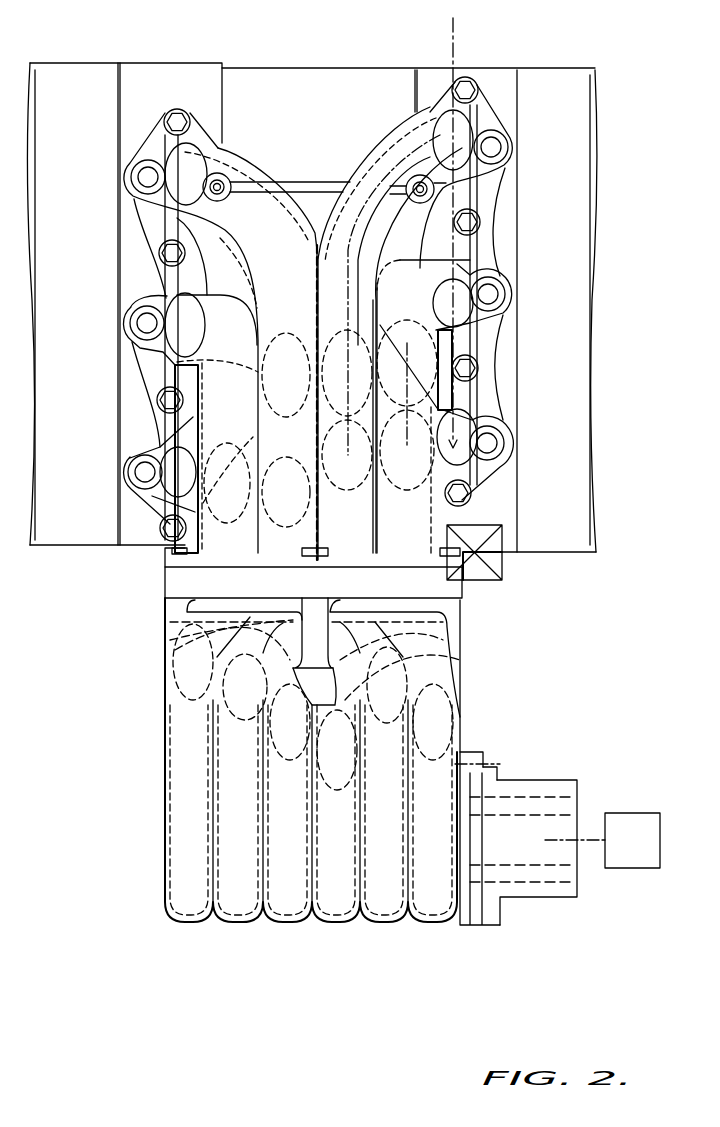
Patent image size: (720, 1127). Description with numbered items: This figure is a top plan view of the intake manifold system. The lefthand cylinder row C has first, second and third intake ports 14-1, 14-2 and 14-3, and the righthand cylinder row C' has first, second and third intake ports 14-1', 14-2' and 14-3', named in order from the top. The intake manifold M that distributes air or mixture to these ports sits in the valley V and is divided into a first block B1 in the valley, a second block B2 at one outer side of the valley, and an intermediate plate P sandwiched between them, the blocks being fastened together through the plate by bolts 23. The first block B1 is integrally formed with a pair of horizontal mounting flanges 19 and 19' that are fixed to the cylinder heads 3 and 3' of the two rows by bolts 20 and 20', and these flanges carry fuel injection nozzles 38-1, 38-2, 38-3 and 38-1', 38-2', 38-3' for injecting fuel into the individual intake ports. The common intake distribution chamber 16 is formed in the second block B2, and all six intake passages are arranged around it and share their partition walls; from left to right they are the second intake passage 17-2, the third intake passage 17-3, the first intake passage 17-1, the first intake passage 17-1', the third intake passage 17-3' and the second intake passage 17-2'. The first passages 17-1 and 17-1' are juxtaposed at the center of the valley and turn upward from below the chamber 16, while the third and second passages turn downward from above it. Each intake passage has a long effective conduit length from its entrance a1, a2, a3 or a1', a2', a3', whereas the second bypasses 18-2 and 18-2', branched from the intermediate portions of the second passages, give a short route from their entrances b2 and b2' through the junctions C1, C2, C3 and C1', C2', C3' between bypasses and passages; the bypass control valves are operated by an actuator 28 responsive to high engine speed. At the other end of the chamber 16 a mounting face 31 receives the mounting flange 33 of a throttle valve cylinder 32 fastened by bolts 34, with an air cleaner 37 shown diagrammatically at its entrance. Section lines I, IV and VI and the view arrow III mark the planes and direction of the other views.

The cylinder head 3 is at (131, 288).
The cylinder head 3' is at (427, 75).
The first intake port 14-1 is at (142, 219).
The second intake port 14-2 is at (137, 370).
The third intake port 14-3 is at (137, 475).
The first intake port 14-1' is at (475, 322).
The second intake port 14-2' is at (504, 335).
The third intake port 14-3' is at (506, 415).
The intake distribution chamber 16 is at (185, 814).
The first intake passage 17-1 is at (267, 541).
The second intake passage 17-2 is at (204, 608).
The third intake passage 17-3 is at (225, 657).
The first intake passage 17-1' is at (373, 538).
The second intake passage 17-2' is at (421, 608).
The third intake passage 17-3' is at (392, 635).
The second bypass 18-2 is at (142, 569).
The second bypass 18-2' is at (488, 539).
The mounting flange 19 is at (189, 333).
The mounting flange 19' is at (487, 179).
The bolt 20 is at (136, 312).
The bolt 20' is at (465, 291).
The bolt 23 is at (172, 550).
The actuator 28 is at (500, 575).
The mounting face 31 is at (478, 752).
The throttle valve cylinder 32 is at (540, 795).
The mounting flange 33 is at (496, 770).
The bolt 34 is at (505, 918).
The air cleaner 37 is at (646, 852).
The fuel injection nozzle 38-1 is at (117, 177).
The fuel injection nozzle 38-2 is at (116, 323).
The fuel injection nozzle 38-3 is at (114, 472).
The fuel injection nozzle 38-1' is at (524, 142).
The fuel injection nozzle 38-2' is at (523, 294).
The fuel injection nozzle 38-3' is at (522, 443).
The entrance a1 is at (290, 740).
The entrance a2 is at (193, 685).
The entrance a3 is at (245, 709).
The entrance a1' is at (337, 766).
The entrance a2' is at (433, 743).
The entrance a3' is at (387, 705).
The entrance b2 is at (218, 628).
The entrance b2' is at (418, 653).
The first block B1 is at (465, 530).
The second block B2 is at (462, 635).
The lefthand cylinder row C is at (62, 276).
The righthand cylinder row C' is at (578, 284).
The junction C1 is at (286, 359).
The junction C2 is at (222, 542).
The junction C3 is at (286, 477).
The junction C1' is at (347, 359).
The junction C2' is at (407, 470).
The junction C3' is at (347, 474).
The intake manifold M is at (195, 417).
The intermediate plate P is at (462, 600).
The section line I is at (75, 598).
The view direction III is at (530, 462).
The section line IV is at (453, 18).
The valley V is at (312, 93).
The section line VI is at (448, 338).